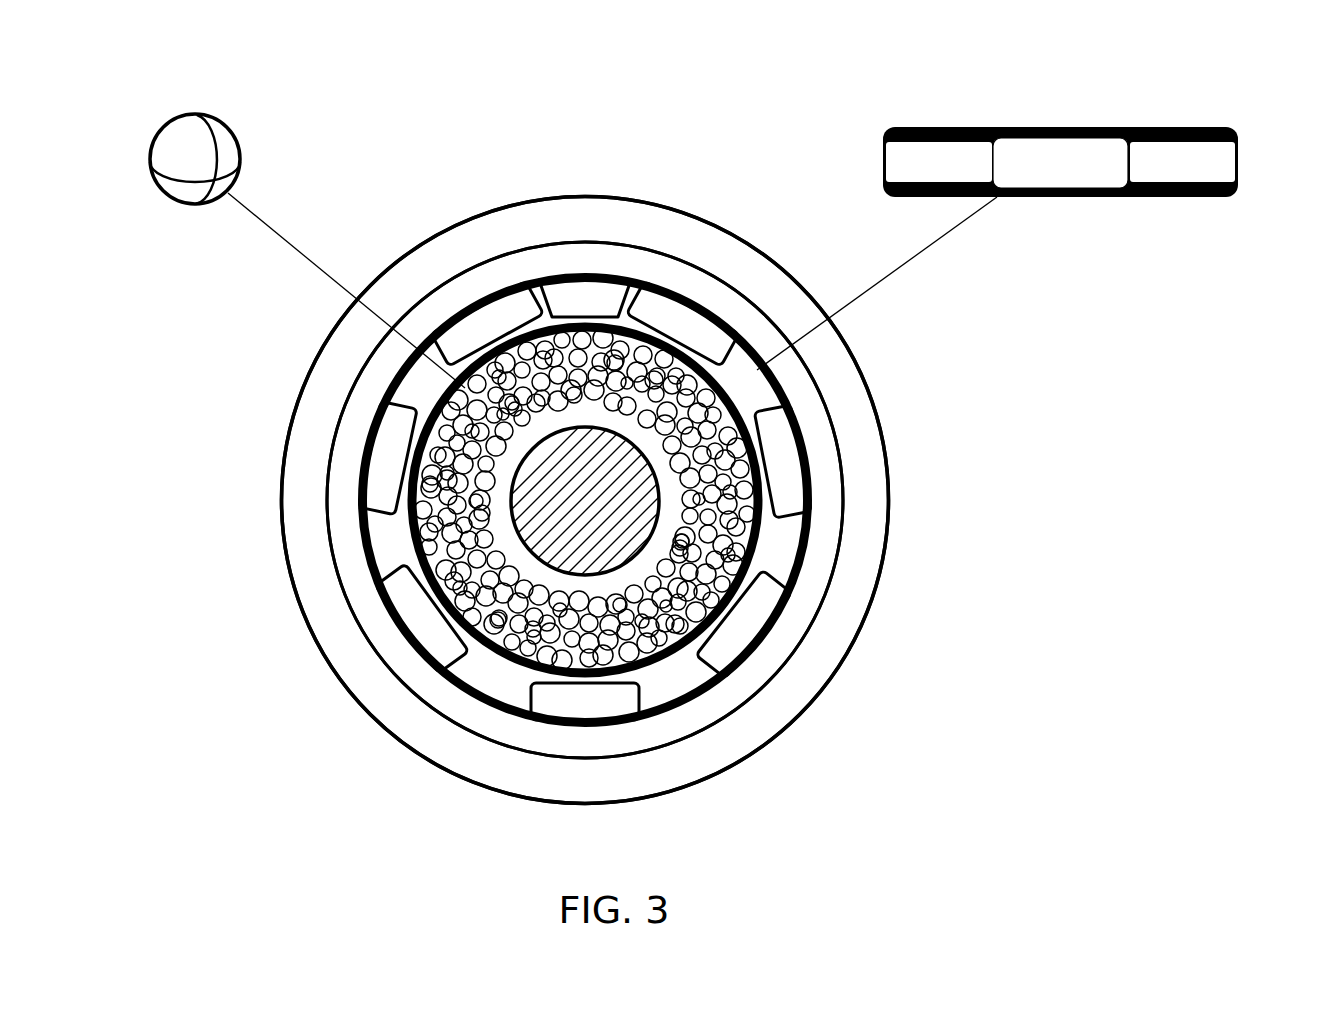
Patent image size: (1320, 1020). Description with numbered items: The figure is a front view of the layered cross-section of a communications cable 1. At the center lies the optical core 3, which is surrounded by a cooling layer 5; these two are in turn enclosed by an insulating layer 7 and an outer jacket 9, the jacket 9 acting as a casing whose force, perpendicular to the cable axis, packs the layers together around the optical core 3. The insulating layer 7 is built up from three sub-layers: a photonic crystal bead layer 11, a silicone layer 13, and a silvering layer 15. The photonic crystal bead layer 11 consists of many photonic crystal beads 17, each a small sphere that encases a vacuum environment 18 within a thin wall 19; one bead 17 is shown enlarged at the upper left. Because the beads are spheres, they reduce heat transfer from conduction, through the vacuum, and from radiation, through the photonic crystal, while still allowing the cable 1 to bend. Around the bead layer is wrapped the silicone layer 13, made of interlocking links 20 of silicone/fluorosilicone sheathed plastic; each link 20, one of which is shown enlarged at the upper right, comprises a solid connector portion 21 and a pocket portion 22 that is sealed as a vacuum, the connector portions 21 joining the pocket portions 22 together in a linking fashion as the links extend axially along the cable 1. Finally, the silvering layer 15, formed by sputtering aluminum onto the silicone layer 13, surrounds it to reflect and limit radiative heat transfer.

The cable 1 is at (610, 96).
The optical core 3 is at (516, 512).
The cooling layer 5 is at (560, 568).
The insulating layer 7 is at (850, 449).
The jacket 9 is at (736, 748).
The photonic crystal bead layer 11 is at (778, 413).
The silicone layer 13 is at (796, 540).
The silvering layer 15 is at (804, 598).
The photonic crystal bead 17 is at (242, 163).
The vacuum environment 18 is at (192, 136).
The wall 19 is at (150, 142).
The interlocking link 20 is at (975, 127).
The connector portion 21 is at (596, 300).
The pocket portion 22 is at (692, 322).